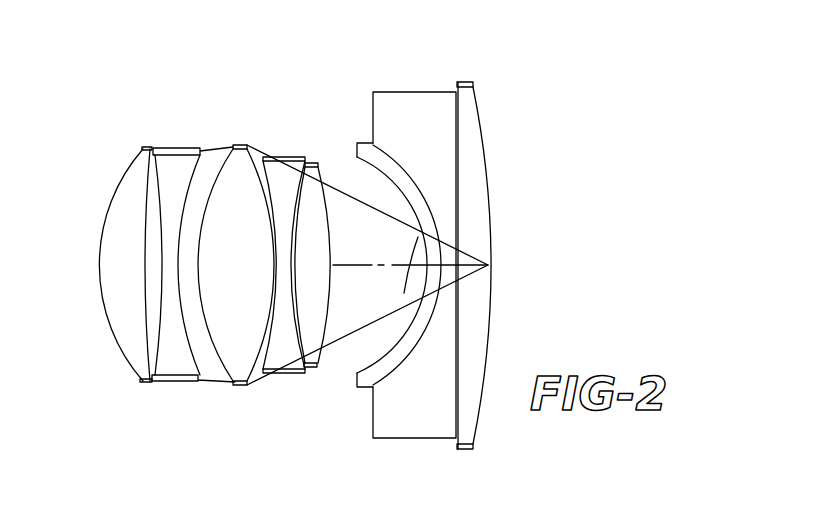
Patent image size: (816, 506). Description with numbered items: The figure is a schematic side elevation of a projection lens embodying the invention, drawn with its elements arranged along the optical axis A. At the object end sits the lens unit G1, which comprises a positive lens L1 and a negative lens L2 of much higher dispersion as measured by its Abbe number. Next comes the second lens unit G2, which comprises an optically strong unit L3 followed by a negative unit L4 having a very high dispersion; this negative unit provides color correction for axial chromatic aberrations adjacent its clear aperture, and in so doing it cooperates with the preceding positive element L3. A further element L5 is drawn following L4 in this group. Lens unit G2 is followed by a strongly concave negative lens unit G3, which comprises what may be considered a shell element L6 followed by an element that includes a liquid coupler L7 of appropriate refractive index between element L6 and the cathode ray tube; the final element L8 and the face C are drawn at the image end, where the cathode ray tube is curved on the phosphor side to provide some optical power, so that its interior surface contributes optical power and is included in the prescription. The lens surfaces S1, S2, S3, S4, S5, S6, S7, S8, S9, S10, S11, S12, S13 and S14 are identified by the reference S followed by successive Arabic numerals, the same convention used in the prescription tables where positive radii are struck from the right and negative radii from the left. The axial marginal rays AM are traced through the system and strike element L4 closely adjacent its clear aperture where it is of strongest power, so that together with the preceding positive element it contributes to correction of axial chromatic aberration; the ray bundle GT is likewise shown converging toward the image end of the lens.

The lens unit G1 is at (200, 118).
The second lens unit G2 is at (305, 118).
The negative lens unit G3 is at (478, 65).
The positive lens L1 is at (127, 168).
The negative lens L2 is at (172, 156).
The optically strong unit L3 is at (233, 151).
The negative unit L4 is at (283, 159).
The fifth lens L5 is at (313, 171).
The shell element L6 is at (362, 142).
The liquid coupler L7 is at (417, 100).
The eighth lens L8 is at (478, 103).
The lens surface S1 is at (103, 308).
The lens surface S2 is at (149, 328).
The lens surface S3 is at (155, 350).
The lens surface S4 is at (196, 343).
The lens surface S5 is at (218, 360).
The lens surface S6 is at (256, 385).
The lens surface S7 is at (263, 363).
The lens surface S8 is at (306, 358).
The lens surface S9 is at (294, 323).
The lens surface S10 is at (320, 337).
The lens surface S11 is at (411, 327).
The lens surface S12 is at (405, 363).
The lens surface S13 is at (457, 413).
The lens surface S14 is at (482, 417).
The optical axis A is at (347, 263).
The axial marginal rays AM is at (395, 265).
The marginal ray GT is at (325, 210).
The cemented lens component C is at (489, 167).